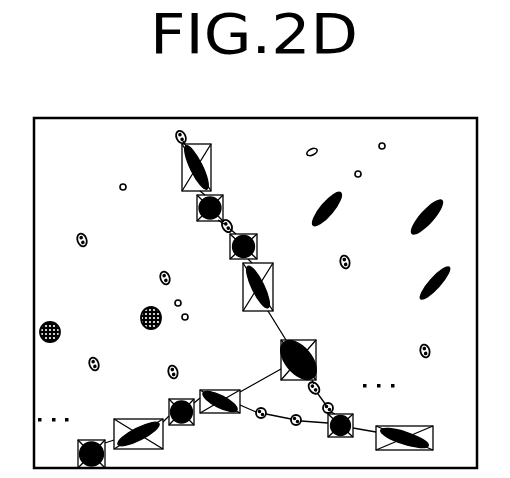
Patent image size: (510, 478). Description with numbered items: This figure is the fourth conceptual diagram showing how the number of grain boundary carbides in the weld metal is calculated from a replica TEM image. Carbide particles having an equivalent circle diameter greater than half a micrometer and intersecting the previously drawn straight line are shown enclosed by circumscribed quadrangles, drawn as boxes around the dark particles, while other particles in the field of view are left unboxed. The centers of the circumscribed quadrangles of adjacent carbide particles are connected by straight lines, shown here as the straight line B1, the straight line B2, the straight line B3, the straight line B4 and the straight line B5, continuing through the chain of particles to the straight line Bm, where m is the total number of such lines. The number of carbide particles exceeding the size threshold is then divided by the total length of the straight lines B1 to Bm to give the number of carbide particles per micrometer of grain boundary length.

The straight line B1 is at (216, 167).
The straight line B2 is at (232, 209).
The straight line B3 is at (277, 284).
The straight line B4 is at (299, 347).
The straight line B5 is at (343, 406).
The straight line Bm is at (95, 437).